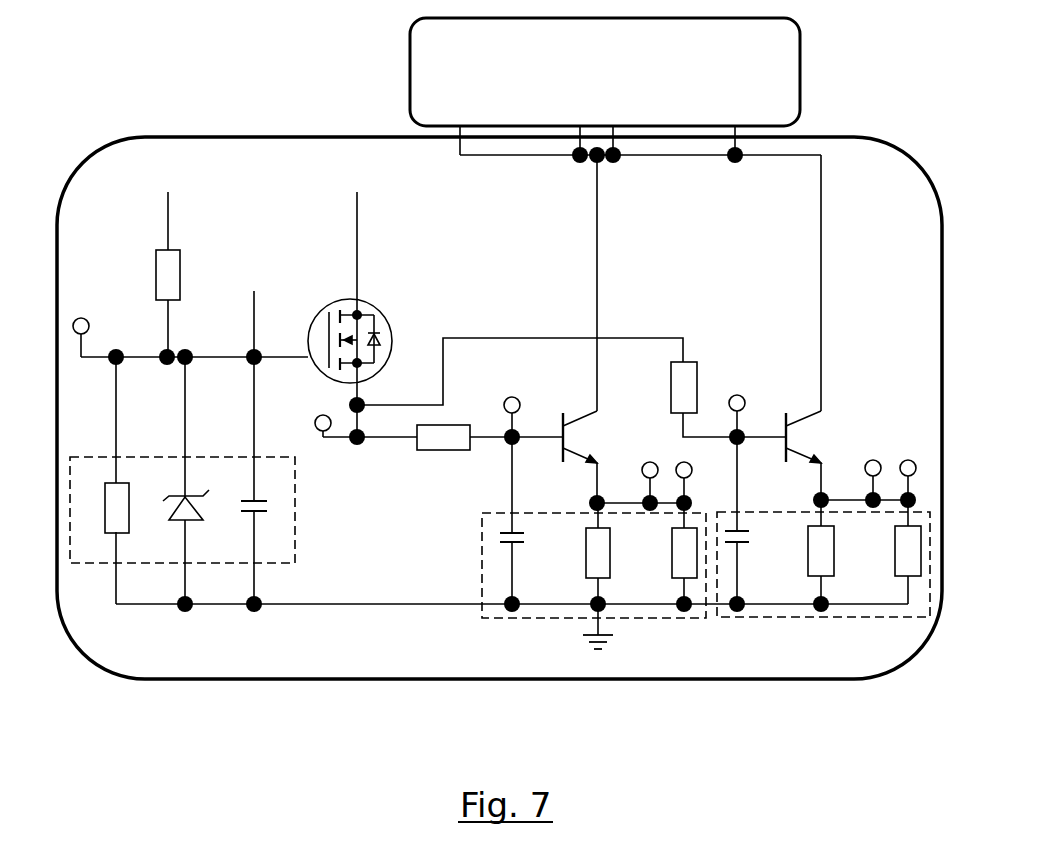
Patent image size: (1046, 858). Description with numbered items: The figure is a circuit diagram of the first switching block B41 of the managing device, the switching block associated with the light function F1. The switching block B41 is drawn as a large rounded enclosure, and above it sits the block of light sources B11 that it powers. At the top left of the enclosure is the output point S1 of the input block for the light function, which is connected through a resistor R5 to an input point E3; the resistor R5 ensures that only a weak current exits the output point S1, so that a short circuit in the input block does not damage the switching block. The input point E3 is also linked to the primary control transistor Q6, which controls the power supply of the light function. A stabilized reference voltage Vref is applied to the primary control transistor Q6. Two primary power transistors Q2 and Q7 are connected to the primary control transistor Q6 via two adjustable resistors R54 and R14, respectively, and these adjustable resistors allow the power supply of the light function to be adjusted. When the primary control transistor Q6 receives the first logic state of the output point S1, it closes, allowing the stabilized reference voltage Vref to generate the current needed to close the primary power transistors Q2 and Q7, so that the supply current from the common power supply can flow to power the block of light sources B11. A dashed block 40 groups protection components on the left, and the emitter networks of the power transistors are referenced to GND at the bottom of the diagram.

The first switching block B41 is at (220, 137).
The block of light sources B11 is at (605, 72).
The output point S1 is at (186, 192).
The stabilized reference voltage Vref is at (374, 192).
The resistor R5 is at (149, 303).
The input point E3 is at (272, 291).
The protection circuit block 40 is at (295, 506).
The primary control transistor Q6 is at (357, 358).
The adjustable resistor R54 is at (443, 450).
The primary power transistor Q2 is at (592, 457).
The adjustable resistor R14 is at (705, 379).
The primary power transistor Q7 is at (814, 455).
The ground GND is at (571, 643).